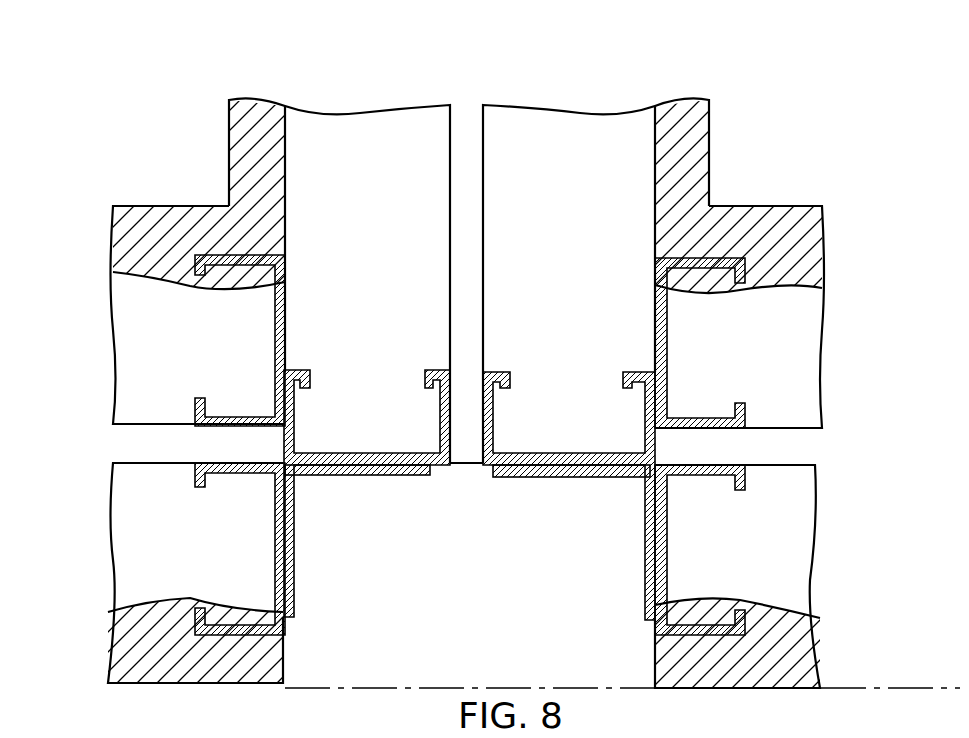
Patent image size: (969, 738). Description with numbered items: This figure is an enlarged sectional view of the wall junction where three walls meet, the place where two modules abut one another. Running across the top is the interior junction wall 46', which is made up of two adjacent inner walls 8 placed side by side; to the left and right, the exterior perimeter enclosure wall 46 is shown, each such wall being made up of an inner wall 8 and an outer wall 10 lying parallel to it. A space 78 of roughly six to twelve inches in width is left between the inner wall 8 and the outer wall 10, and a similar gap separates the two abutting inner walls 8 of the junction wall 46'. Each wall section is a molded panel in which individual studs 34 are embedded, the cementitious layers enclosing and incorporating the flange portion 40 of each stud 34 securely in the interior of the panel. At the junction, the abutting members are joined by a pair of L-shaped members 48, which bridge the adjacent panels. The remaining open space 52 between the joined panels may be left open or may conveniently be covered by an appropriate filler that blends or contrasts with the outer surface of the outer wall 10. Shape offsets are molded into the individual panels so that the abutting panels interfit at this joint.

The inner wall 8 is at (230, 102).
The outer wall 10 is at (825, 465).
The stud 34 is at (342, 452).
The flange portion 40 is at (237, 260).
The exterior perimeter enclosure wall 46 is at (461, 445).
The interior junction wall 46' is at (471, 46).
The L-shaped member 48 is at (377, 476).
The open space 52 is at (478, 581).
The space 78 is at (467, 243).